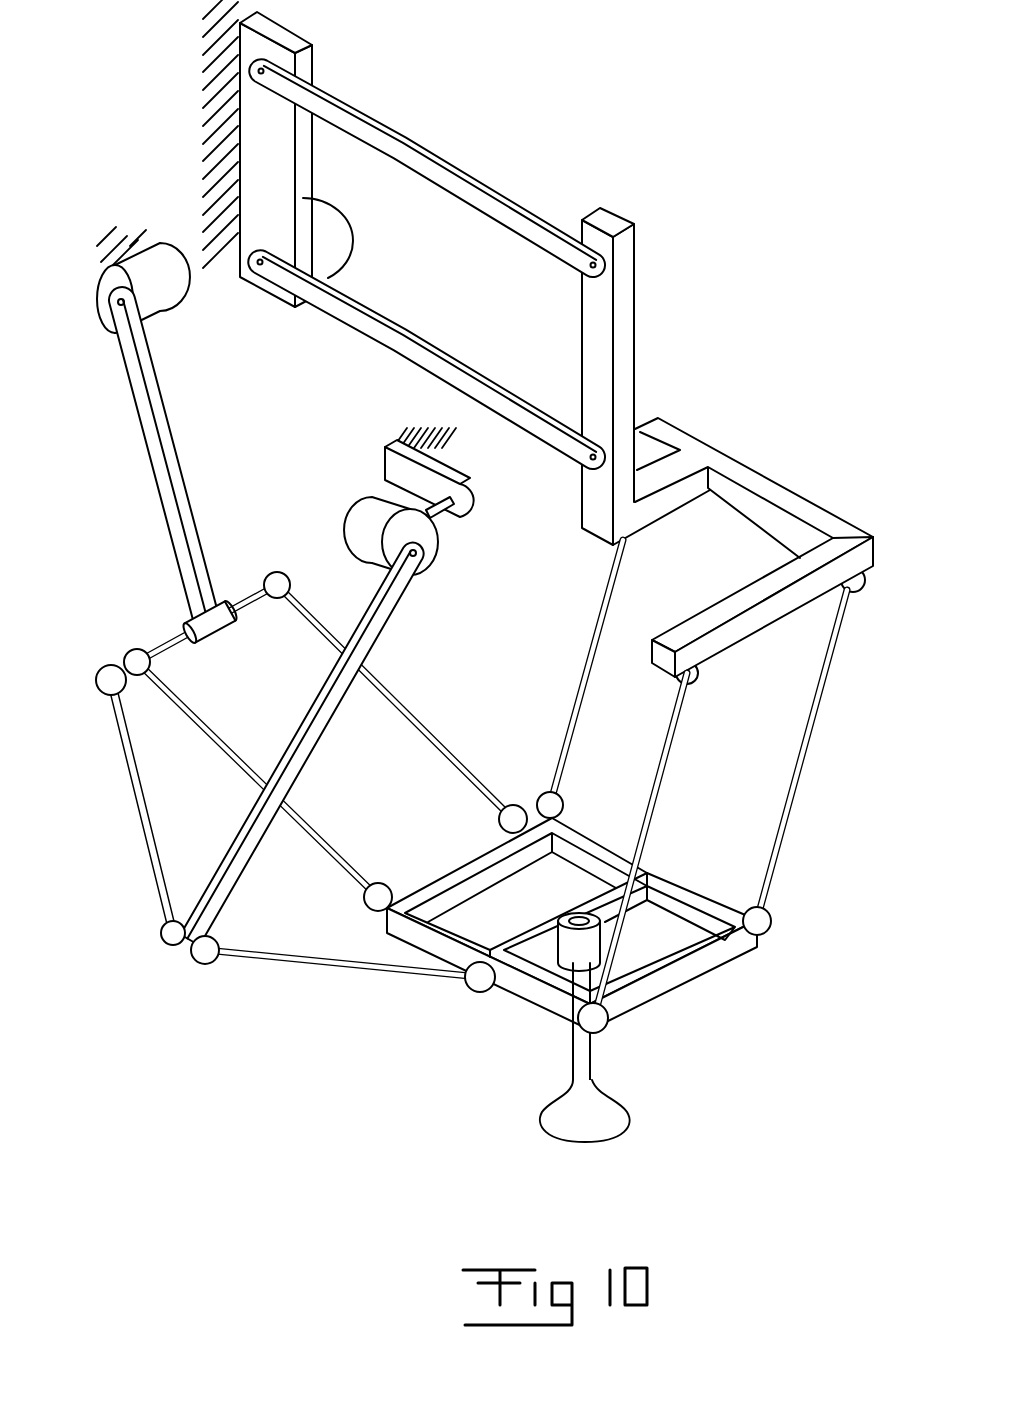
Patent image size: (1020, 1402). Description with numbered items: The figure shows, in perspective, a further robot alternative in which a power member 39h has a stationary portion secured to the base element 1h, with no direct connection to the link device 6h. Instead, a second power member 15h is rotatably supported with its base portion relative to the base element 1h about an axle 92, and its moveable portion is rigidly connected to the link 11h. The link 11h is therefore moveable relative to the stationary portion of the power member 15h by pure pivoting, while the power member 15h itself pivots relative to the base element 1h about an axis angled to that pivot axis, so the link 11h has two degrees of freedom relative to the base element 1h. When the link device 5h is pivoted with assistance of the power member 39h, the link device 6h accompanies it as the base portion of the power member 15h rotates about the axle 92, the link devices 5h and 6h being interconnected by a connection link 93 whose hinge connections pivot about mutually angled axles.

The base element 1h is at (129, 213).
The power member 39h is at (168, 293).
The power member 15h is at (378, 518).
The axle 92 is at (431, 514).
The link device 5h is at (129, 595).
The link device 6h is at (289, 705).
The link 11h is at (327, 707).
The connection link 93 is at (152, 828).